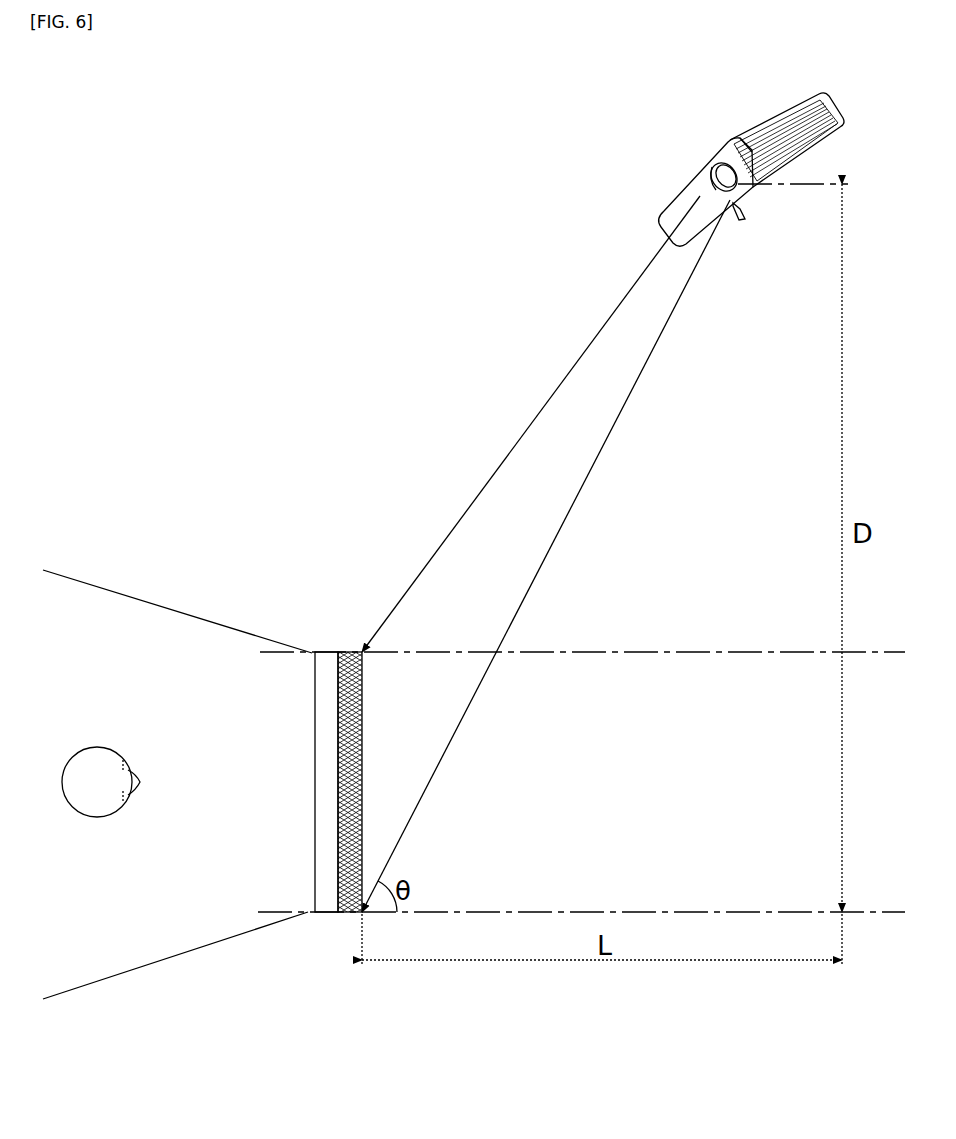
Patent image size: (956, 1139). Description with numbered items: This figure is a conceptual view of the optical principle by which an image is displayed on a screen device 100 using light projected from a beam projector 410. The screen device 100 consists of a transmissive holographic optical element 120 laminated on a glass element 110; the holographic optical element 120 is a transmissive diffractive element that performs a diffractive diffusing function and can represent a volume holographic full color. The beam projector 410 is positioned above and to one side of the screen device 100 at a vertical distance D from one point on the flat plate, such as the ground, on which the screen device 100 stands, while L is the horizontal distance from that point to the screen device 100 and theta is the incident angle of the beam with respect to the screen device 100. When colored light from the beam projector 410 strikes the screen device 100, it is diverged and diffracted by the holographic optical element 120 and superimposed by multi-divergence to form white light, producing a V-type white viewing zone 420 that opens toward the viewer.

The screen device 100 is at (303, 867).
The glass element 110 is at (327, 902).
The holographic optical element 120 is at (353, 912).
The beam projector 410 is at (677, 192).
The white viewing zone 420 is at (138, 623).